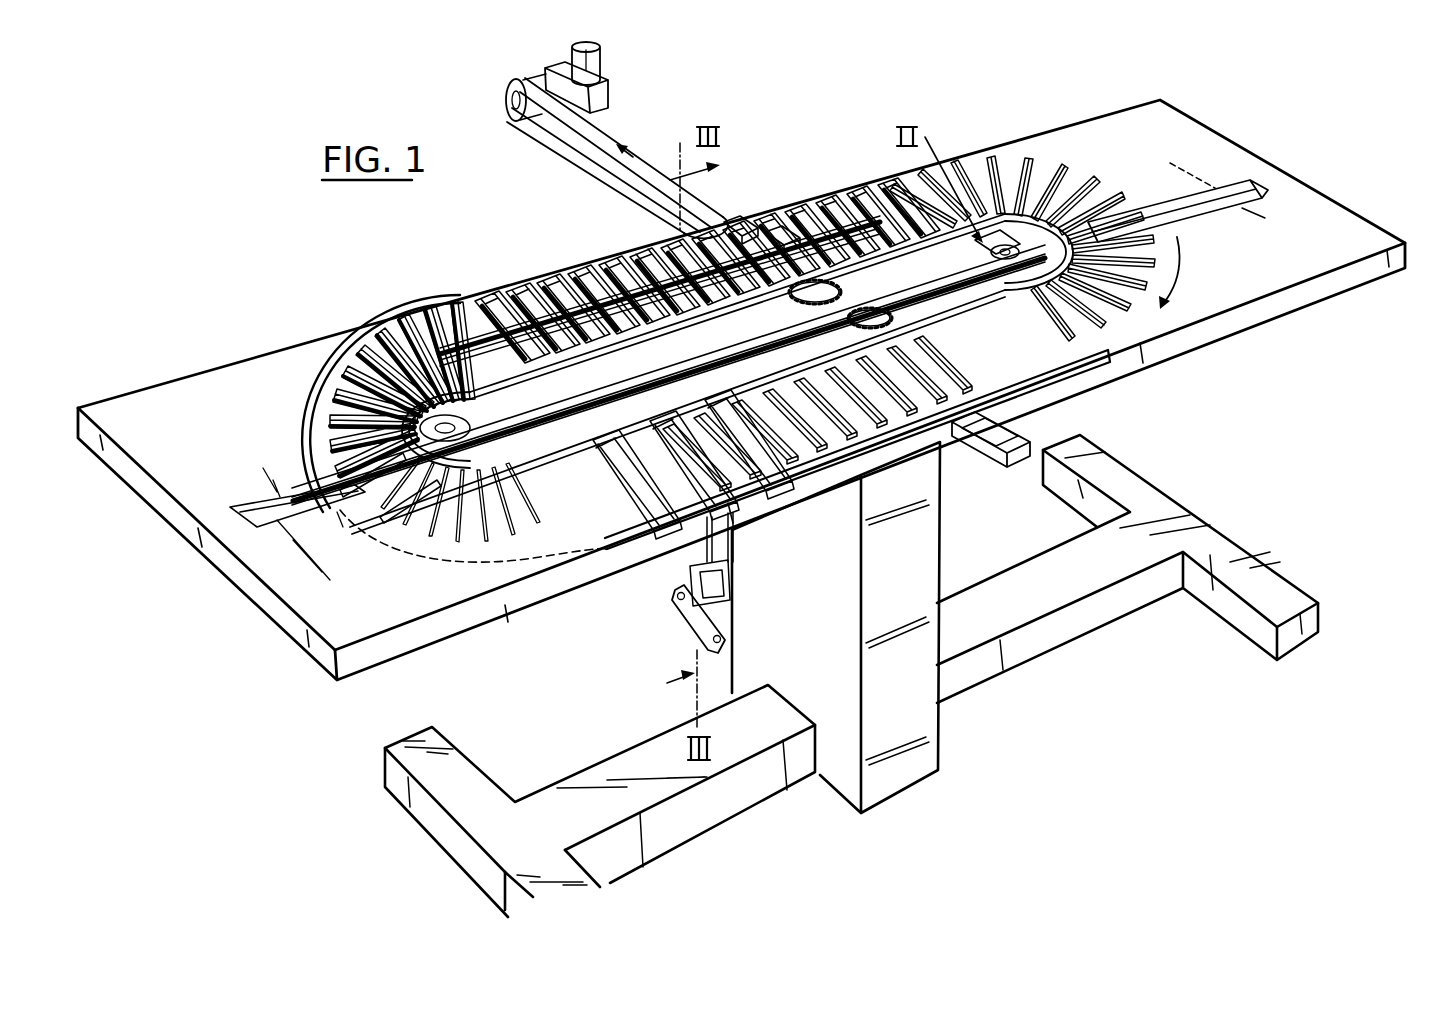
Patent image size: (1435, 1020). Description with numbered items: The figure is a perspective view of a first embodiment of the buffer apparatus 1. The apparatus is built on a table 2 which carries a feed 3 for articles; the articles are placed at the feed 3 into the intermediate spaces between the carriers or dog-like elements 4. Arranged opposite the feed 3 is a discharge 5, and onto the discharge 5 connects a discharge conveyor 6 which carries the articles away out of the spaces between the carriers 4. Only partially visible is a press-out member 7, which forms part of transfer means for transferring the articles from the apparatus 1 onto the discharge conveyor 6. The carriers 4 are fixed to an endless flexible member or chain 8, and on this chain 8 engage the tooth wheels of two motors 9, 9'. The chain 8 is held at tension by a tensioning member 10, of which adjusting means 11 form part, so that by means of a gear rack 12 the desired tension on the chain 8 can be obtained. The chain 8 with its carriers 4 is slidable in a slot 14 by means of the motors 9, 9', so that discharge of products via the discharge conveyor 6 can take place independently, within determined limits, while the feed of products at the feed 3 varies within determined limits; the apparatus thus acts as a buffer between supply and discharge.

The buffer apparatus 1 is at (967, 86).
The table 2 is at (1257, 338).
The feed 3 is at (1046, 431).
The carriers 4 is at (856, 190).
The discharge 5 is at (752, 160).
The discharge conveyor 6 is at (665, 122).
The press-out member 7 is at (773, 224).
The chain 8 is at (473, 444).
The motor 9 is at (873, 297).
The motor 9' is at (801, 307).
The tensioning member 10 is at (677, 376).
The adjusting means 11 is at (1107, 364).
The gear rack 12 is at (977, 230).
The slot 14 is at (1183, 205).